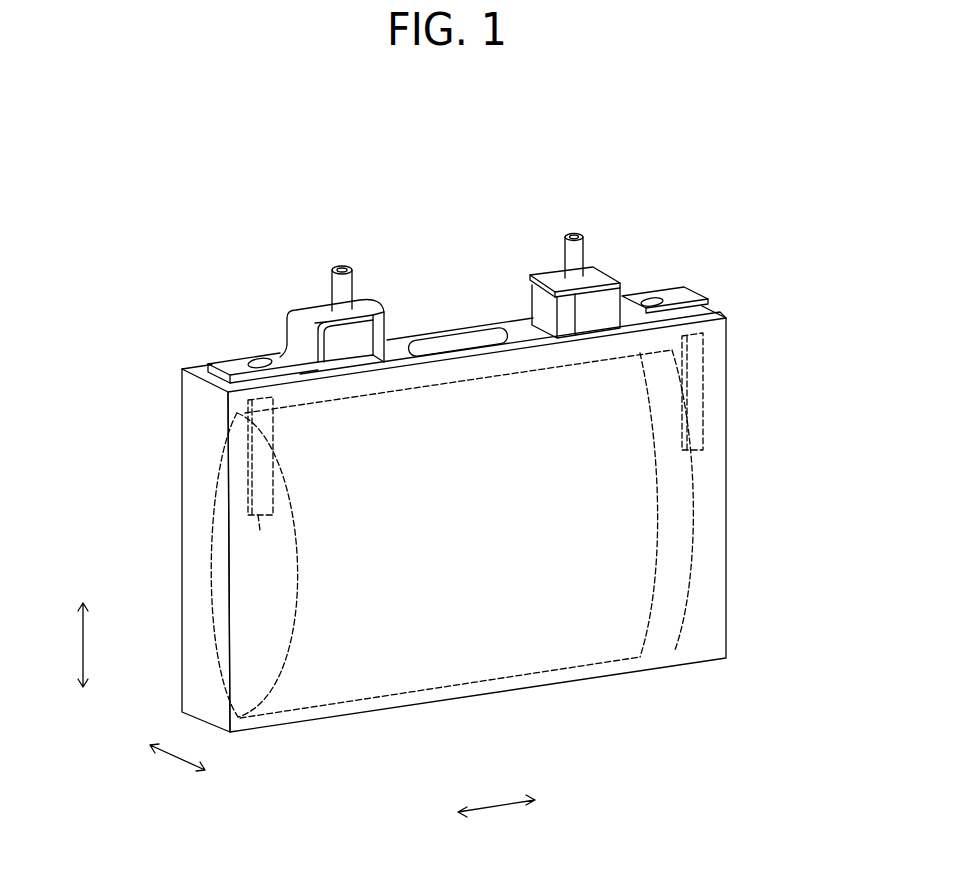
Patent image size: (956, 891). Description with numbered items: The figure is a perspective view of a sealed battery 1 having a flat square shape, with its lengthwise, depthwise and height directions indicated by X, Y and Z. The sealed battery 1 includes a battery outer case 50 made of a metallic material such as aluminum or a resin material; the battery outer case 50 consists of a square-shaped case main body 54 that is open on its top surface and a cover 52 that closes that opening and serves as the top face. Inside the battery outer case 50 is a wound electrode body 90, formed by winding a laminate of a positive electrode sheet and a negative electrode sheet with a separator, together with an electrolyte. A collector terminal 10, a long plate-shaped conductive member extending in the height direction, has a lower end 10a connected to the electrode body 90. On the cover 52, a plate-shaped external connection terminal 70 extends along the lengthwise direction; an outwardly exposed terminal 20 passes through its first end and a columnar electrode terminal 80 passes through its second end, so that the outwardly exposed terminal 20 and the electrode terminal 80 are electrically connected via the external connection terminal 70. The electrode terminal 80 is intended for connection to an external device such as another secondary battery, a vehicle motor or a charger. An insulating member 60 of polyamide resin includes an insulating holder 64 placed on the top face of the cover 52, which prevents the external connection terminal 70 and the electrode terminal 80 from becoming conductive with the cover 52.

The sealed battery 1 is at (91, 186).
The collector terminal 10 is at (461, 434).
The lower end 10a is at (256, 497).
The outwardly exposed terminal 20 is at (255, 359).
The battery outer case 50 is at (738, 328).
The cover 52 is at (518, 330).
The case main body 54 is at (728, 517).
The insulating member 60 is at (443, 310).
The insulating holder 64 is at (458, 335).
The external connection terminal 70 is at (315, 313).
The electrode terminal 80 is at (340, 266).
The electrode body 90 is at (502, 630).